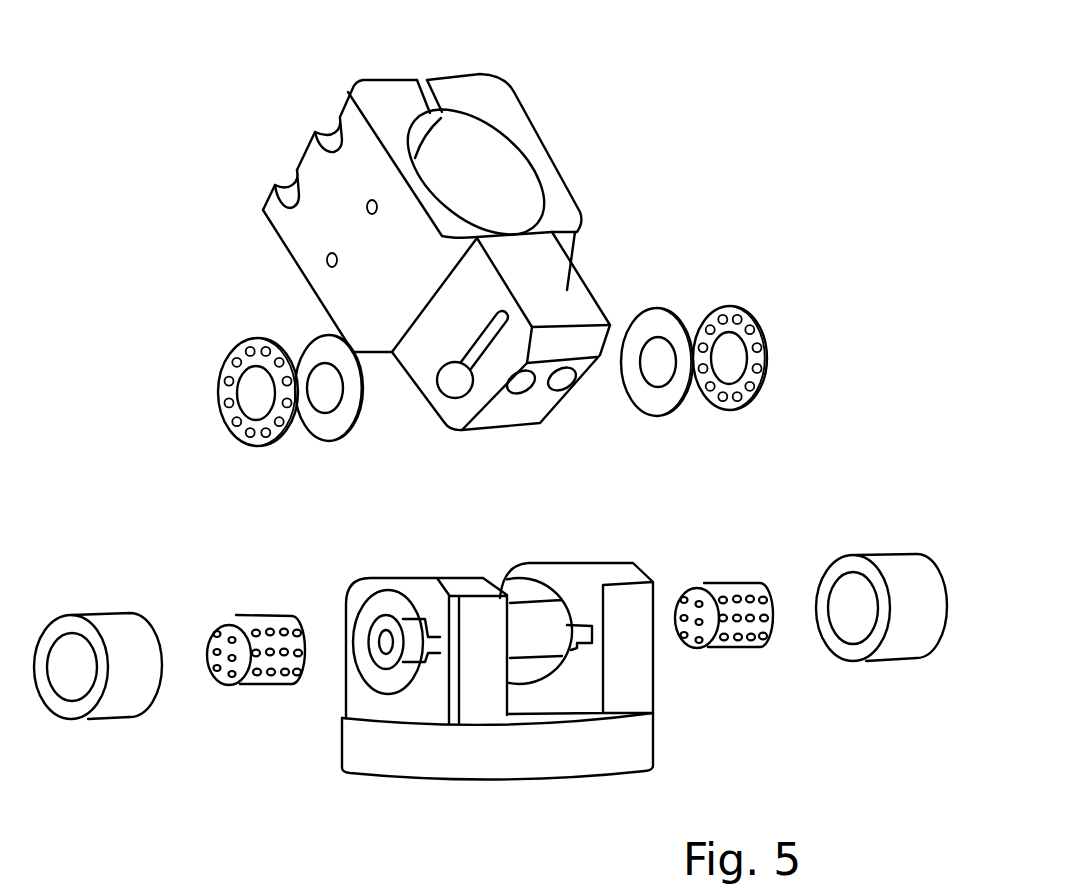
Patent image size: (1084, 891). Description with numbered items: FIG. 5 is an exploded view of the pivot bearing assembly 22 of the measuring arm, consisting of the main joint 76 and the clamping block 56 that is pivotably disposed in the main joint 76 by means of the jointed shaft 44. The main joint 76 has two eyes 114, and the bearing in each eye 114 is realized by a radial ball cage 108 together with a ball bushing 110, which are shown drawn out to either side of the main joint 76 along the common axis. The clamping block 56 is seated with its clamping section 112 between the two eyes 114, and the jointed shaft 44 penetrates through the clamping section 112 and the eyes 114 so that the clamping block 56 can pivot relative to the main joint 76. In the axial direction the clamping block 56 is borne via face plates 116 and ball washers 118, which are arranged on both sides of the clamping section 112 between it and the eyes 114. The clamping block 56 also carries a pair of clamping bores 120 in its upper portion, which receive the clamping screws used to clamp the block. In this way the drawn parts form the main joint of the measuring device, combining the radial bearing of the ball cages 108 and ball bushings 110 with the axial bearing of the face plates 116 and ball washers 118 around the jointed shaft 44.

The clamp assembly 22 is at (608, 166).
The jointed shaft 44 is at (408, 653).
The clamping block 56 is at (426, 244).
The main joint 76 is at (497, 671).
The radial ball cage 108 is at (737, 580).
The ball bushing 110 is at (903, 570).
The clamping section 112 is at (567, 288).
The eye 114 is at (467, 671).
The face plate 116 is at (657, 322).
The ball washer 118 is at (732, 317).
The clamping bore 120 is at (283, 180).